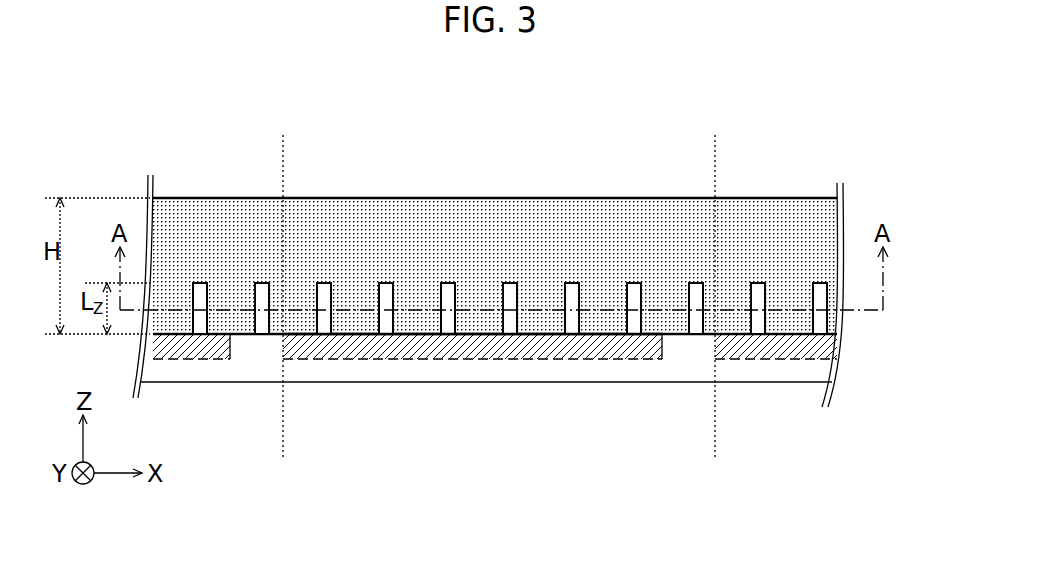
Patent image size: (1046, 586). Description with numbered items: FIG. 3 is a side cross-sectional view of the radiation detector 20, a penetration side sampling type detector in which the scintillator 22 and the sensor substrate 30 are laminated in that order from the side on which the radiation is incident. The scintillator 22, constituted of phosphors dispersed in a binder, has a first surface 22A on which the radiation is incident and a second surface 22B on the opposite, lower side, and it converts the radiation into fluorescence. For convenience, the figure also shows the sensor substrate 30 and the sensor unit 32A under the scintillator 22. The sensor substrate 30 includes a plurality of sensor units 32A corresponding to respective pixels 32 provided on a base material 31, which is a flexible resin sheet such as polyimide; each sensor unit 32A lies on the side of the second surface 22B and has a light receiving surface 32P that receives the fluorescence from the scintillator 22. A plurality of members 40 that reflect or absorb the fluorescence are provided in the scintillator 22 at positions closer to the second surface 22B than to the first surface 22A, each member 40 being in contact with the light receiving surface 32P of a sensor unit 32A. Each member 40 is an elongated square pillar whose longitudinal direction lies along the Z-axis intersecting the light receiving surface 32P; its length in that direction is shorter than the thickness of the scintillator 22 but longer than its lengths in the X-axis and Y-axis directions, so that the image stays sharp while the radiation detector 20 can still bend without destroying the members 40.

The radiation detector 20 is at (648, 125).
The scintillator 22 is at (772, 222).
The first surface 22A is at (252, 189).
The second surface 22B is at (243, 340).
The sensor substrate 30 is at (910, 328).
The base material 31 is at (827, 368).
The pixel 32 is at (283, 428).
The sensor unit 32A is at (828, 345).
The light receiving surface 32P is at (417, 330).
The member 40 is at (512, 297).